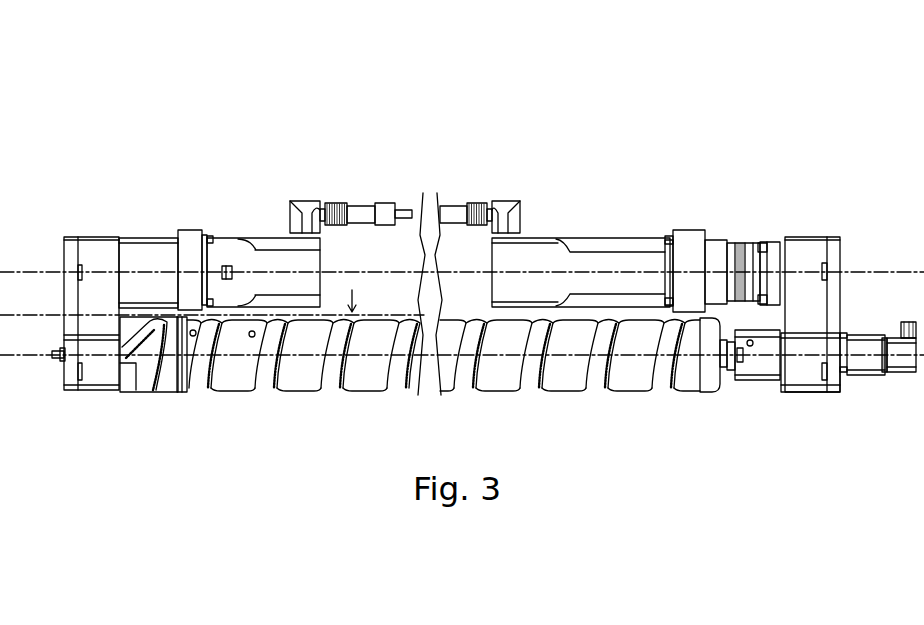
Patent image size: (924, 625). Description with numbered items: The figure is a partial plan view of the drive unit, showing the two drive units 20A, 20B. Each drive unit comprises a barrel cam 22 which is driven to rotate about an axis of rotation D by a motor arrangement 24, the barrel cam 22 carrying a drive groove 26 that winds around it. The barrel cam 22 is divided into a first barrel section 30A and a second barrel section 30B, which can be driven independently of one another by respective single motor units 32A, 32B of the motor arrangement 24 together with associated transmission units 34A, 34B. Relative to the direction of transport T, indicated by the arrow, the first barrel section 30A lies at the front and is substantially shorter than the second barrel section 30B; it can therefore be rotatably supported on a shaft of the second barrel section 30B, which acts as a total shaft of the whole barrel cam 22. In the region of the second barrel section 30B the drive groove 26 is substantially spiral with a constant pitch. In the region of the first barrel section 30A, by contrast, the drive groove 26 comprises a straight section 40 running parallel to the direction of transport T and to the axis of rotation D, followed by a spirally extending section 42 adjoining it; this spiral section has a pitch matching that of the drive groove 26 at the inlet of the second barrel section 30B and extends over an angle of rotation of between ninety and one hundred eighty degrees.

The drive unit 20A is at (302, 86).
The drive unit 20B is at (421, 132).
The barrel cam 22 is at (257, 360).
The motor arrangement 24 is at (575, 167).
The drive groove 26 is at (336, 404).
The first barrel section 30A is at (142, 405).
The second barrel section 30B is at (239, 405).
The single motor unit 32A is at (233, 242).
The single motor unit 32B is at (608, 238).
The transmission unit 34A is at (93, 253).
The transmission unit 34B is at (799, 250).
The straight section 40 is at (134, 357).
The spirally extending section 42 is at (164, 309).
The axis of rotation D is at (847, 354).
The direction of transport T is at (705, 449).